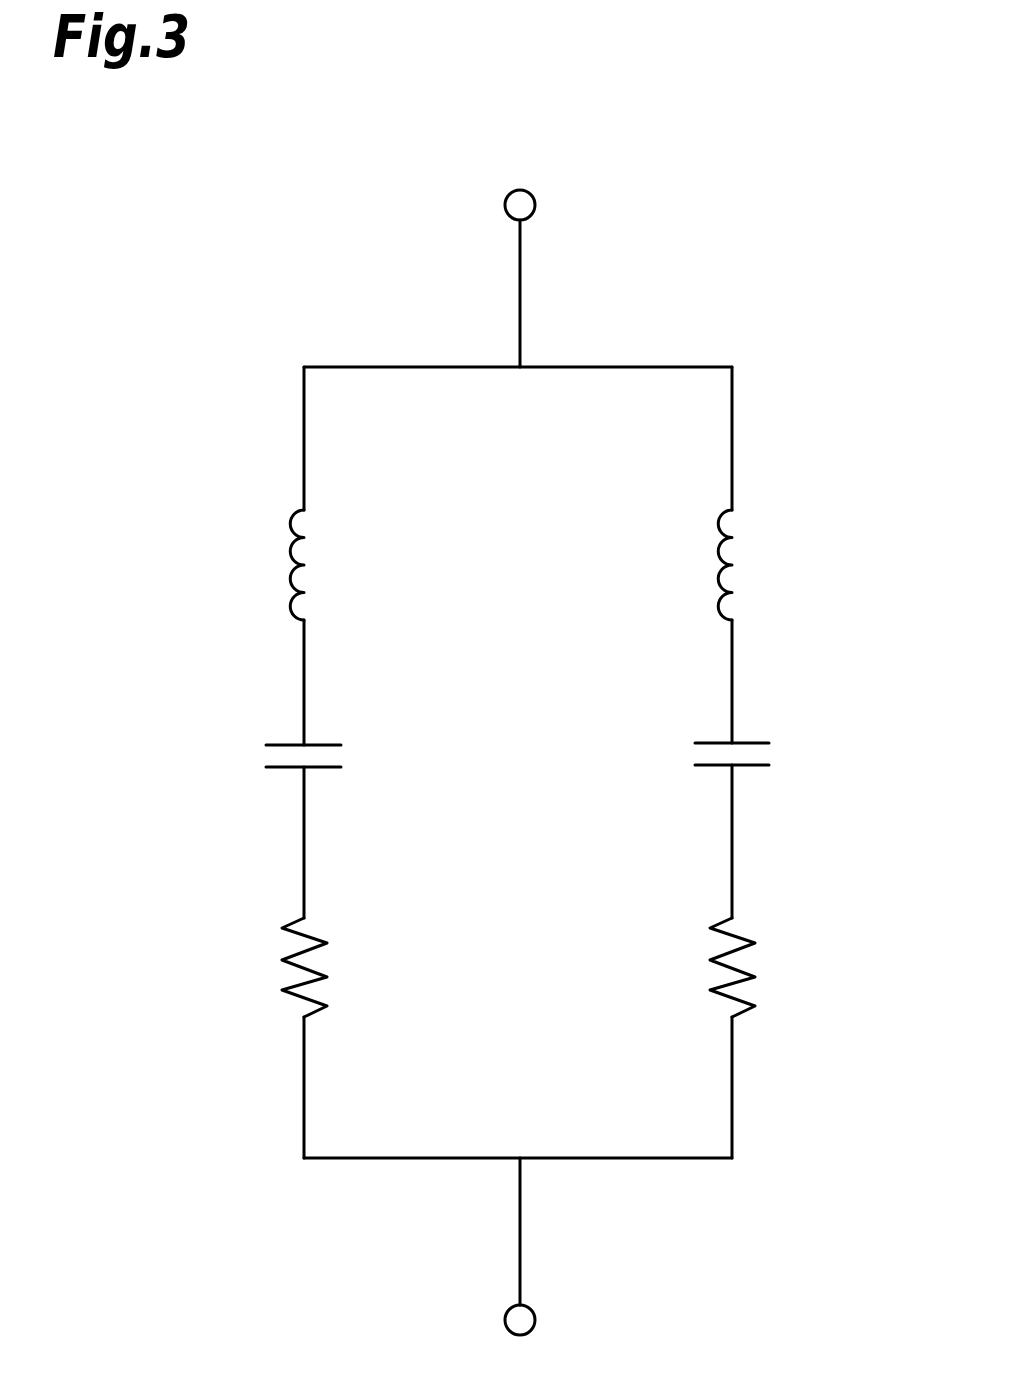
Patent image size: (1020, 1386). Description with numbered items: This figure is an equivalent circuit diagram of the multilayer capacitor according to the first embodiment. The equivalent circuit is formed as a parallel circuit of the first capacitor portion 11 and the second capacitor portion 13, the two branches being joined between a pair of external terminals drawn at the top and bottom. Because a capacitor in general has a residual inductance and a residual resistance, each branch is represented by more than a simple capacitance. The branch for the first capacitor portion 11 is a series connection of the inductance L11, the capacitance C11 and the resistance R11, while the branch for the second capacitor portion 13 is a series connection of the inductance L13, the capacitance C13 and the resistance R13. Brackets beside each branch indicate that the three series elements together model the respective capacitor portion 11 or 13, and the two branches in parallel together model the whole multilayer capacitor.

The first capacitor portion 11 is at (243, 500).
The second capacitor portion 13 is at (832, 500).
The inductance L11 is at (337, 565).
The capacitance C11 is at (328, 736).
The resistance R11 is at (337, 957).
The inductance L13 is at (764, 565).
The capacitance C13 is at (755, 735).
The resistance R13 is at (764, 957).